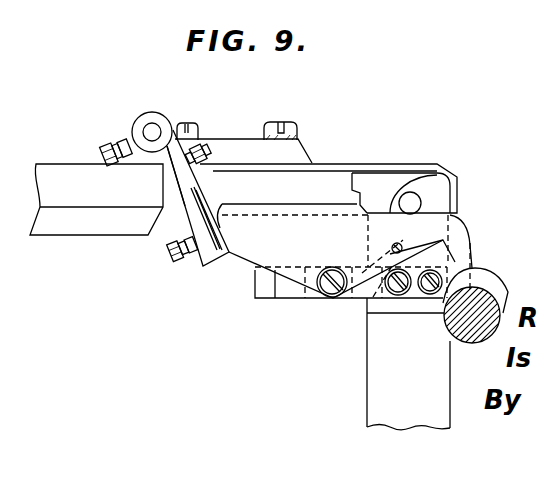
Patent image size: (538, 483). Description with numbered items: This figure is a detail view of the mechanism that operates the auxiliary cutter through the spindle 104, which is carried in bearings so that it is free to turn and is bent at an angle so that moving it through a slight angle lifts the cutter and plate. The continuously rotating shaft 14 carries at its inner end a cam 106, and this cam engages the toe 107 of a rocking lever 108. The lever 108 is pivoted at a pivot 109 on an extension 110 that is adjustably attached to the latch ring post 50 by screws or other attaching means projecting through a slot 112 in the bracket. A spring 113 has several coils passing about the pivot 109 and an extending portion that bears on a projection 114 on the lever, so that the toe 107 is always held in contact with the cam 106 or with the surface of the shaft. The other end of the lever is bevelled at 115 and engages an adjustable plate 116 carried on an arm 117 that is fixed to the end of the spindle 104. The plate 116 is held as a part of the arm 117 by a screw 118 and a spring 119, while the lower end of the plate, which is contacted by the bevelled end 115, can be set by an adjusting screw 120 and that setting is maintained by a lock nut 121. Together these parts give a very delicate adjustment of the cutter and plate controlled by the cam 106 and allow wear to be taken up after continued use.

The spindle 104 is at (153, 124).
The cam 106 is at (490, 282).
The toe 107 is at (462, 248).
The rocking lever 108 is at (292, 235).
The pivot 109 is at (333, 299).
The extension 110 is at (282, 293).
The slot 112 is at (415, 290).
The spring 113 is at (372, 266).
The projection 114 is at (398, 250).
The bevelled end 115 is at (221, 231).
The adjustable plate 116 is at (199, 200).
The arm 117 is at (168, 172).
The screw 118 is at (210, 153).
The spring 119 is at (200, 145).
The screw 120 is at (171, 256).
The lock nut 121 is at (193, 264).
The latch ring post 50 is at (370, 399).
The shaft 14 is at (463, 343).